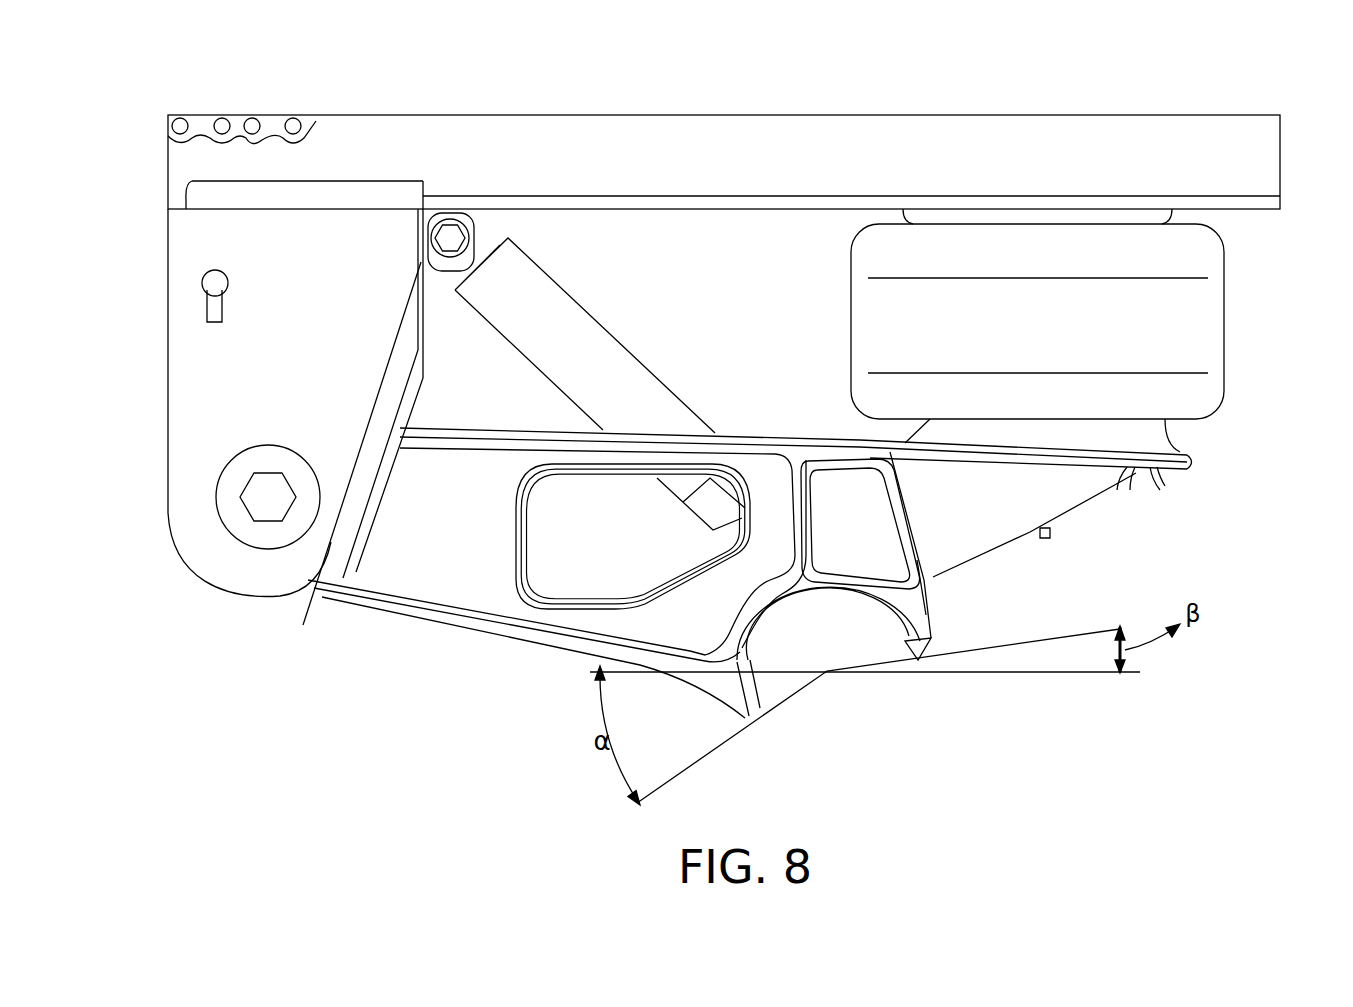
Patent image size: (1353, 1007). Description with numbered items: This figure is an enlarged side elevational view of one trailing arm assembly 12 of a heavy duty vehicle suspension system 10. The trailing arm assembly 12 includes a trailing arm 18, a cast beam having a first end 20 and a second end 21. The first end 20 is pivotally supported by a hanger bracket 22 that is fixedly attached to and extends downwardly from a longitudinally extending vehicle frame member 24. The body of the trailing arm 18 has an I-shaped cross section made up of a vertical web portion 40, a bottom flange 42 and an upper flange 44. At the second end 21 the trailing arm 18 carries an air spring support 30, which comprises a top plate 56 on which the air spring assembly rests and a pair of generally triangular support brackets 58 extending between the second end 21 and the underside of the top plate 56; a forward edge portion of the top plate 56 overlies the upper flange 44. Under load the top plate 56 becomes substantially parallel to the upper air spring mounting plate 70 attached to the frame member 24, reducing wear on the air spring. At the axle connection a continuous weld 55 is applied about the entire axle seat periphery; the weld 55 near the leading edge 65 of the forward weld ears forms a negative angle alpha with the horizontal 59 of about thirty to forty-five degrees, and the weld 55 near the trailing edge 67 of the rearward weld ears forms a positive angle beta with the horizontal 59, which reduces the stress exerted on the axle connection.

The vehicle suspension system 10 is at (400, 697).
The trailing arm assembly 12 is at (748, 380).
The trailing arm 18 is at (498, 645).
The first end 20 is at (308, 592).
The second end 21 is at (806, 440).
The hanger bracket 22 is at (190, 542).
The vehicle frame member 24 is at (497, 132).
The air spring support 30 is at (1072, 520).
The vertical web portion 40 is at (397, 548).
The bottom flange 42 is at (377, 607).
The upper flange 44 is at (457, 428).
The weld 55 is at (762, 645).
The top plate 56 is at (1153, 470).
The support bracket 58 is at (1082, 490).
The horizontal 59 is at (1018, 680).
The leading edge 65 is at (745, 721).
The trailing edge 67 is at (916, 648).
The upper air spring mounting plate 70 is at (1046, 215).